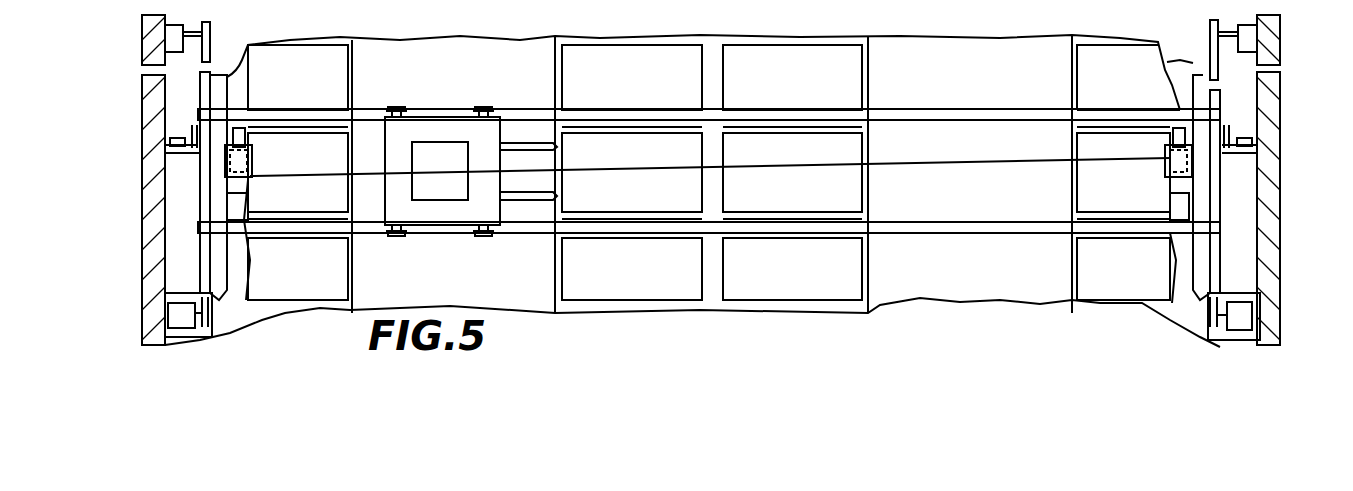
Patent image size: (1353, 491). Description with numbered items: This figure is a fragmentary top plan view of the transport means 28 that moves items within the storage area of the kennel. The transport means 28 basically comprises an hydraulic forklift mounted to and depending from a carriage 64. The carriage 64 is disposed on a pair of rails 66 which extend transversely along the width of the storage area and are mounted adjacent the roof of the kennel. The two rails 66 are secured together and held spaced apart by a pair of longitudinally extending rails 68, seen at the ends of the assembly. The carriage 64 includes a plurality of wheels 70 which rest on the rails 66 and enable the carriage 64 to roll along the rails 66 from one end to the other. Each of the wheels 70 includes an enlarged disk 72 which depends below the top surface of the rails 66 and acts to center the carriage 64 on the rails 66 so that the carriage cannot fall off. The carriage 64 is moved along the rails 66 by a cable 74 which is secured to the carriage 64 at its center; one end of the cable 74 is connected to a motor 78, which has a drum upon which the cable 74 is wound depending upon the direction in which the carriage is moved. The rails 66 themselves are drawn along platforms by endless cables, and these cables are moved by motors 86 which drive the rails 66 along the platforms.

The transport means 28 is at (471, 169).
The carriage 64 is at (440, 222).
The rails 66 is at (590, 113).
The longitudinally extending rails 68 is at (240, 210).
The wheels 70 is at (402, 105).
The enlarged disk 72 is at (395, 107).
The cable 74 is at (897, 167).
The motor 78 is at (255, 157).
The motors 86 is at (178, 313).